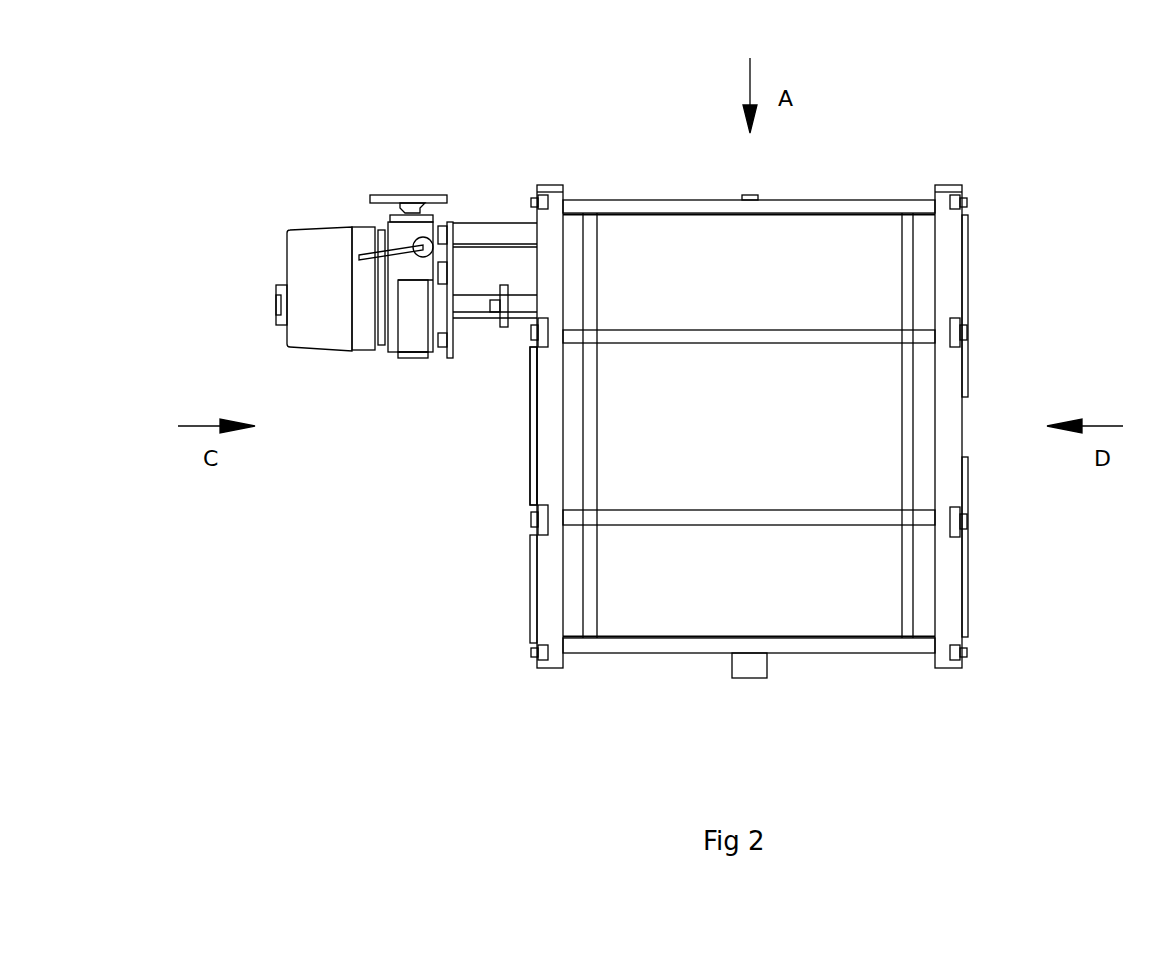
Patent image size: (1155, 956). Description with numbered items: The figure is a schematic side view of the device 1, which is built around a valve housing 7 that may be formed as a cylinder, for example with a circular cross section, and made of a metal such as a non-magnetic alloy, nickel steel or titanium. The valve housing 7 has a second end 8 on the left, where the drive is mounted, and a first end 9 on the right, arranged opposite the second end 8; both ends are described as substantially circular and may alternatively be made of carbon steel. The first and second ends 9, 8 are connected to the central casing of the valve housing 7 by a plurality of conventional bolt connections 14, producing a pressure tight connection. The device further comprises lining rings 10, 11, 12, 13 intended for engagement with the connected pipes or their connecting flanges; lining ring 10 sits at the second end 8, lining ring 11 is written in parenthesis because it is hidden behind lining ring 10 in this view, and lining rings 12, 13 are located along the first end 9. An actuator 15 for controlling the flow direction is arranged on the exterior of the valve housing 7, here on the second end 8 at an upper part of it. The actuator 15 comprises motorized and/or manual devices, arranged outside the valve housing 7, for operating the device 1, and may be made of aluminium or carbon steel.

The device 1 is at (862, 700).
The valve housing 7 is at (848, 248).
The second end 8 is at (555, 190).
The first end 9 is at (943, 190).
The lining ring 10 is at (533, 478).
The lining ring 11 is at (461, 470).
The lining ring 12 is at (967, 283).
The lining ring 13 is at (968, 575).
The bolt connections 14 is at (668, 208).
The actuator 15 is at (332, 258).